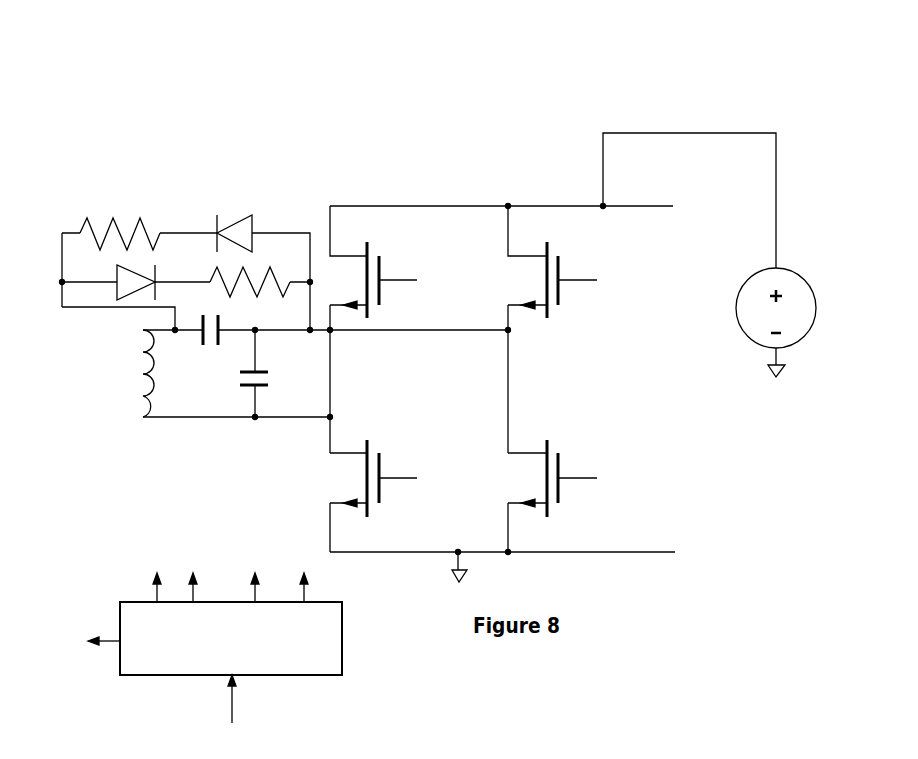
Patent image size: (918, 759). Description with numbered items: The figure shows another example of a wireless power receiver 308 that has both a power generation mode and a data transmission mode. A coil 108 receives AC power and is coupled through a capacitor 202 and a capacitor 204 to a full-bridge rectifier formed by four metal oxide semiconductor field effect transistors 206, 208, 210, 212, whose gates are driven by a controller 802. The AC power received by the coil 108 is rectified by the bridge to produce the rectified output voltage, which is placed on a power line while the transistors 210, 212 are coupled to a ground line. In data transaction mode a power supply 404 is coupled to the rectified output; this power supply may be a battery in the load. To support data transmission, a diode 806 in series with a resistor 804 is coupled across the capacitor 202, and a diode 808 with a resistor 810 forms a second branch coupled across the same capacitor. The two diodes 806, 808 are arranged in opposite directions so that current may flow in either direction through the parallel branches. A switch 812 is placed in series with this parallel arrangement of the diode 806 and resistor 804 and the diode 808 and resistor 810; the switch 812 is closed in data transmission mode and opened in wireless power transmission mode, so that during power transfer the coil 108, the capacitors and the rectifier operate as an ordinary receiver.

The receiver 308 is at (118, 73).
The resistor 804 is at (118, 223).
The diode 806 is at (230, 222).
The diode 808 is at (118, 287).
The resistor 810 is at (270, 270).
The switch 812 is at (110, 322).
The coil 108 is at (143, 363).
The capacitor 202 is at (202, 337).
The capacitor 204 is at (248, 378).
The transistor 206 is at (372, 258).
The transistor 208 is at (550, 252).
The transistor 210 is at (383, 452).
The transistor 212 is at (548, 452).
The power supply 404 is at (803, 300).
The controller 802 is at (196, 646).